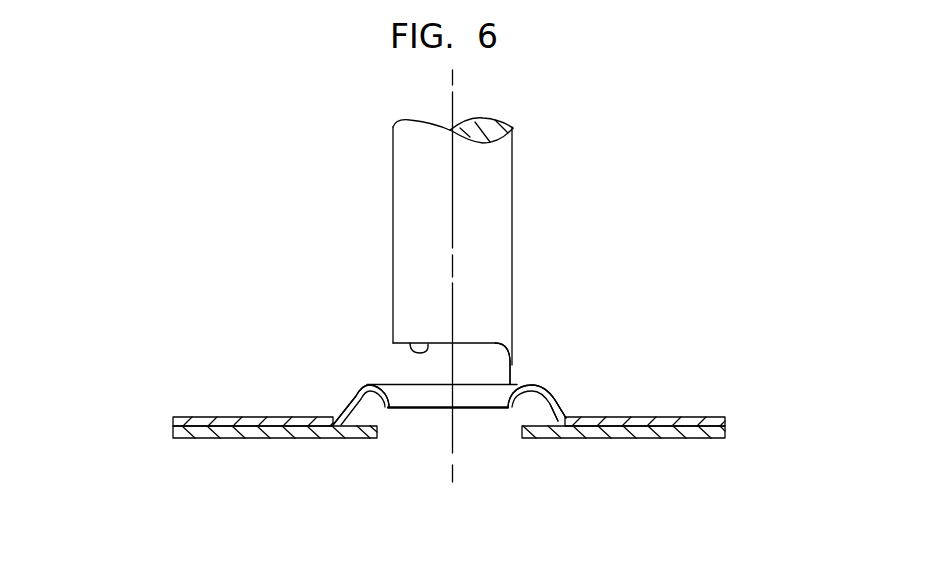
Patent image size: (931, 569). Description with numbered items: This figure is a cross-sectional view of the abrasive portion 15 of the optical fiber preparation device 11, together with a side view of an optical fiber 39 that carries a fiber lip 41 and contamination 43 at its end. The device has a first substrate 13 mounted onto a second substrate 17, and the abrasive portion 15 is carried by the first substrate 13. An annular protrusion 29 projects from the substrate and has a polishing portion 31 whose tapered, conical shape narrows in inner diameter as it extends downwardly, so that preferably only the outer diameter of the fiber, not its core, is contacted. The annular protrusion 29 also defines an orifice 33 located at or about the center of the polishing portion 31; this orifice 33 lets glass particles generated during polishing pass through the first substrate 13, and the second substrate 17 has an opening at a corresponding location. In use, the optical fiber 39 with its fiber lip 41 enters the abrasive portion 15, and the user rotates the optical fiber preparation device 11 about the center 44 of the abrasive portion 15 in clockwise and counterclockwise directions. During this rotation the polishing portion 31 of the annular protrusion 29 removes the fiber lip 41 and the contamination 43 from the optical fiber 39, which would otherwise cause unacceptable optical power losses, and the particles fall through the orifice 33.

The optical fiber preparation device 11 is at (297, 380).
The first substrate 13 is at (174, 420).
The abrasive portion 15 is at (341, 392).
The second substrate 17 is at (174, 432).
The annular protrusion 29 is at (568, 407).
The polishing portion 31 is at (511, 387).
The orifice 33 is at (480, 412).
The optical fiber 39 is at (490, 215).
The fiber lip 41 is at (514, 363).
The contamination 43 is at (412, 350).
The center 44 is at (453, 107).